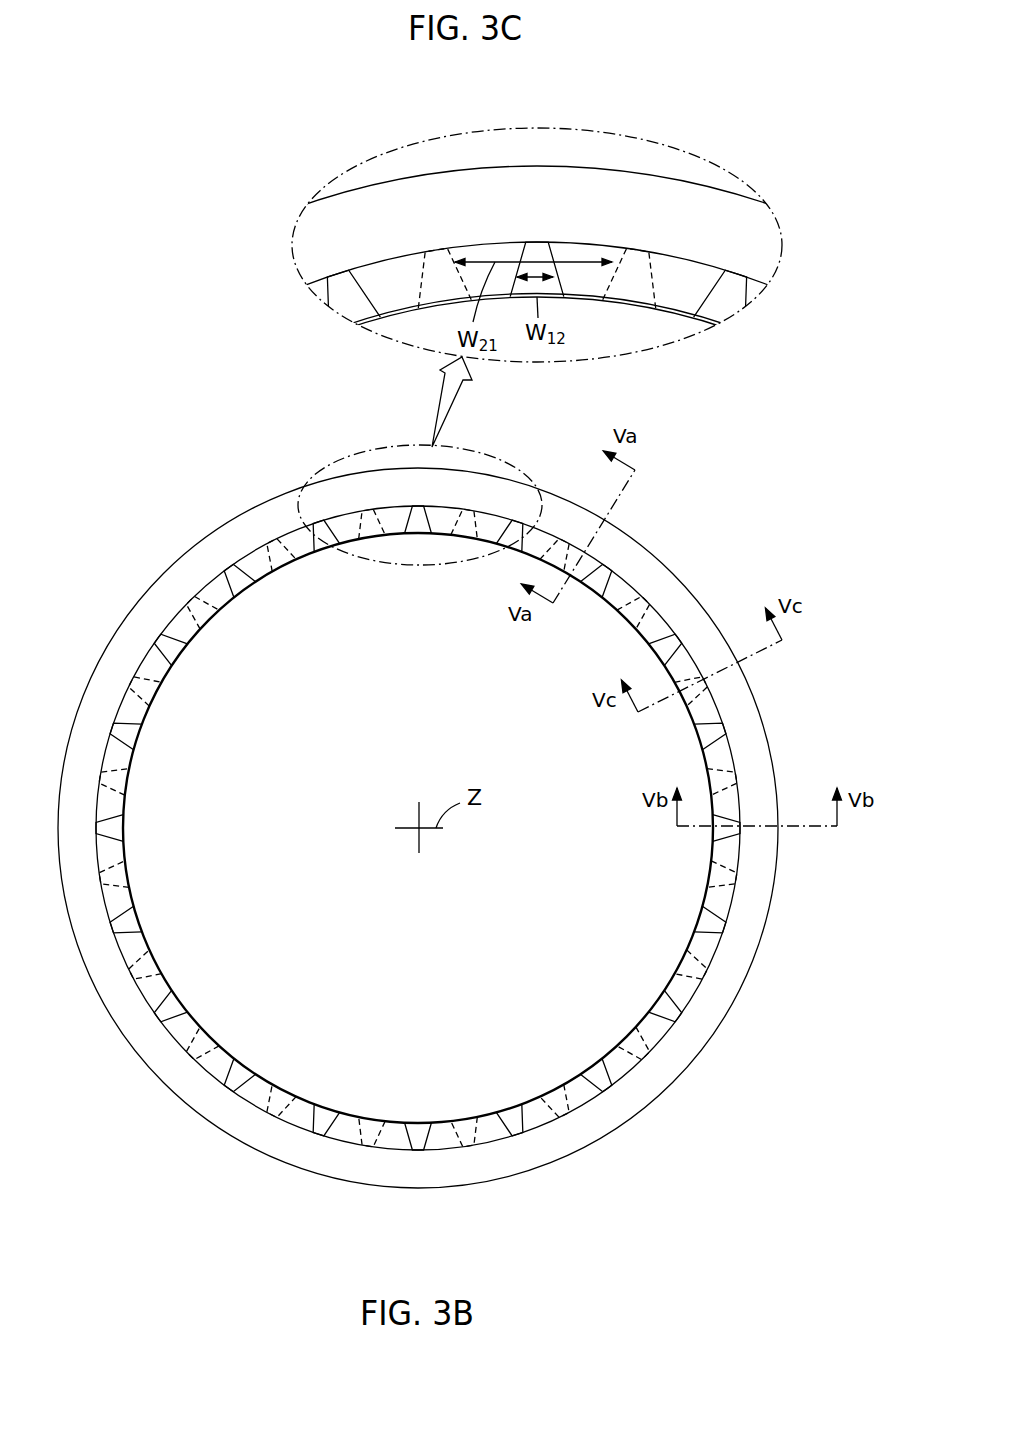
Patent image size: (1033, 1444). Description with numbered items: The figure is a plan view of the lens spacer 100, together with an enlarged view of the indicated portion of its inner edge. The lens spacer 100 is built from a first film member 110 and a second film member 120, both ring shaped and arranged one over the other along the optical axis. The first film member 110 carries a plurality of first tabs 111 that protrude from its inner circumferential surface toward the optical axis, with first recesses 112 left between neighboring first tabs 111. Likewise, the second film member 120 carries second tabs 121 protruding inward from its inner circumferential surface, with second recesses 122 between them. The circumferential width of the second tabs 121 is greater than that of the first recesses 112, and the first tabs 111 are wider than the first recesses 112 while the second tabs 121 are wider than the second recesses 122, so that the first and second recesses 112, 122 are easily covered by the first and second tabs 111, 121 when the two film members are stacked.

In FIG. 3B, the lens spacer 100 is at (118, 474).
In FIG. 3B, the first film member 110 is at (445, 1140).
In FIG. 3C, the first film member 110 is at (372, 277).
In FIG. 3B, the first tabs 111 is at (658, 1028).
In FIG. 3C, the first tabs 111 is at (582, 252).
In FIG. 3B, the first recesses 112 is at (662, 990).
In FIG. 3C, the first recesses 112 is at (530, 240).
In FIG. 3B, the second film member 120 is at (397, 1138).
In FIG. 3C, the second film member 120 is at (400, 270).
In FIG. 3B, the second tabs 121 is at (537, 1115).
In FIG. 3C, the second tabs 121 is at (687, 275).
In FIG. 3B, the second recesses 122 is at (558, 1115).
In FIG. 3C, the second recesses 122 is at (632, 250).